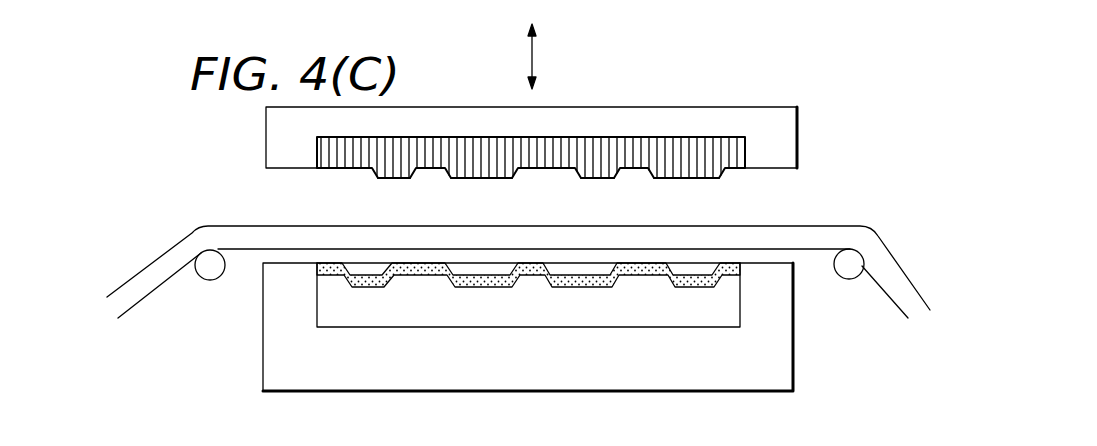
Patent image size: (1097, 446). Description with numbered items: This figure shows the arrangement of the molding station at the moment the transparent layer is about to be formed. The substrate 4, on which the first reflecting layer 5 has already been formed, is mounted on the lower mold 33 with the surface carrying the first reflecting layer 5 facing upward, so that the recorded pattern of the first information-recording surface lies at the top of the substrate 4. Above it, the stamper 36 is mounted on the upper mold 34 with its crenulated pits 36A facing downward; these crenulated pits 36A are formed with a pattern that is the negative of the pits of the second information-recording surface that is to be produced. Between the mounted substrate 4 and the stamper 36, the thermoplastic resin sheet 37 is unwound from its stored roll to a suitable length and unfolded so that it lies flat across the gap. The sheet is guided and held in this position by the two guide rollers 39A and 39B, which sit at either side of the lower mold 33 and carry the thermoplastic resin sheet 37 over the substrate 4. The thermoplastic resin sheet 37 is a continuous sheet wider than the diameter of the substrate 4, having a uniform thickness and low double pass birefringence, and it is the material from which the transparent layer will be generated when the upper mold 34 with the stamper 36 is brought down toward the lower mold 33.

The mold 34 is at (783, 120).
The stamper 36 is at (737, 148).
The crenulated pits 36A is at (697, 179).
The thermoplastic resin sheet 37 is at (160, 263).
The guide roller 39A is at (208, 268).
The guide roller 39B is at (852, 271).
The mold 33 is at (272, 362).
The substrate 4 is at (700, 318).
The first reflecting layer 5 is at (732, 275).